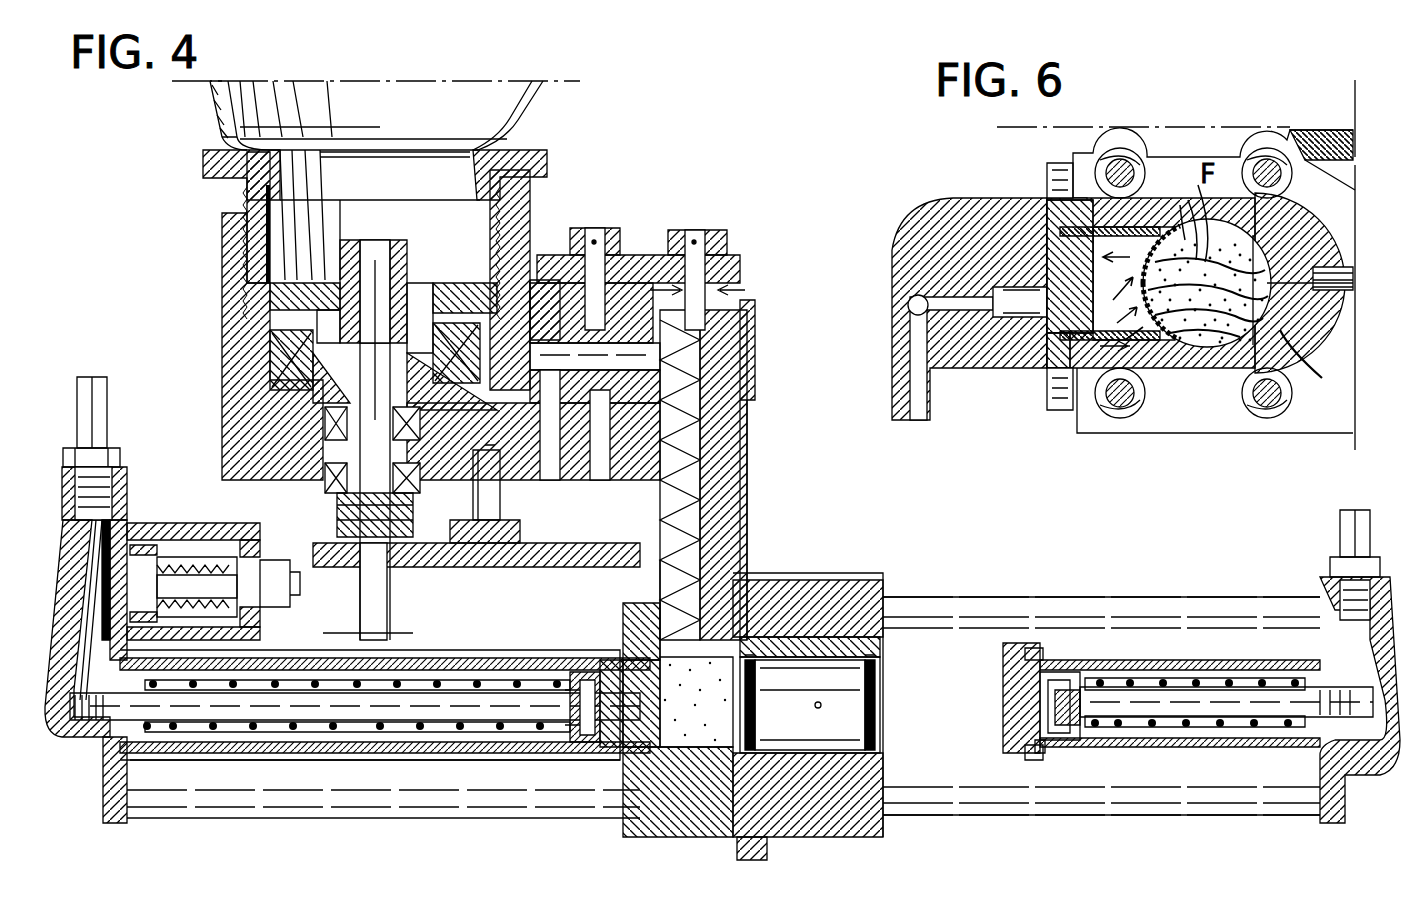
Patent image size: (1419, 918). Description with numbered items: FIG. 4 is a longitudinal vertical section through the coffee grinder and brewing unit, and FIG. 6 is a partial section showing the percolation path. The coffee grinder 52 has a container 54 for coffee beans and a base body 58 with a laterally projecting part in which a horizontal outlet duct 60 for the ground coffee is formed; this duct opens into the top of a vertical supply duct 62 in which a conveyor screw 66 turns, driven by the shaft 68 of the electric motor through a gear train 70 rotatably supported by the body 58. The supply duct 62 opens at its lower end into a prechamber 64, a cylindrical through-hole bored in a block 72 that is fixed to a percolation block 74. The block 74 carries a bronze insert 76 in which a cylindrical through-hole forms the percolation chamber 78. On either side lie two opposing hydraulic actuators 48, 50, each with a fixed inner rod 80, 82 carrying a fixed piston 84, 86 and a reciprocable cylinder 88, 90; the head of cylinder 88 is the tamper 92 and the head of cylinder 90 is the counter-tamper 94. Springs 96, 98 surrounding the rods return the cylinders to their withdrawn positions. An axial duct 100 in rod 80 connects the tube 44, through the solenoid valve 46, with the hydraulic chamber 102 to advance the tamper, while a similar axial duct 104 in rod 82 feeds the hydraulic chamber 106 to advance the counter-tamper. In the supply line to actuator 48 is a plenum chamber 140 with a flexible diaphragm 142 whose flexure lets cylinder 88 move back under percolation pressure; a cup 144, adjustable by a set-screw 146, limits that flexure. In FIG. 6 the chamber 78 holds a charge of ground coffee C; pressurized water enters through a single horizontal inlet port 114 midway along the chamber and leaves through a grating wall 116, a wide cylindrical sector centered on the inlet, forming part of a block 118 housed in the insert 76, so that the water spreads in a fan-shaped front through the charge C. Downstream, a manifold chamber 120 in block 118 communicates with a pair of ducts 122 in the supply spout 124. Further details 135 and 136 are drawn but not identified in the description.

In FIG. 4, the tube 44 is at (110, 390).
In FIG. 4, the solenoid valve 46 is at (1345, 540).
In FIG. 4, the hydraulic actuator 48 is at (372, 772).
In FIG. 4, the hydraulic actuator 50 is at (1202, 770).
In FIG. 4, the coffee grinder 52 is at (224, 200).
In FIG. 4, the container 54 is at (522, 108).
In FIG. 4, the base body 58 is at (228, 278).
In FIG. 4, the horizontal outlet duct 60 is at (533, 345).
In FIG. 4, the supply duct 62 is at (718, 365).
In FIG. 4, the prechamber 64 is at (700, 780).
In FIG. 4, the conveyor screw 66 is at (735, 440).
In FIG. 4, the shaft 68 is at (365, 605).
In FIG. 4, the gear train 70 is at (656, 218).
In FIG. 4, the block 72 is at (665, 780).
In FIG. 4, the percolation block 74 is at (830, 800).
In FIG. 6, the percolation block 74 is at (1172, 415).
In FIG. 4, the insert 76 is at (825, 630).
In FIG. 6, the insert 76 is at (1175, 360).
In FIG. 4, the percolation chamber 78 is at (875, 745).
In FIG. 6, the percolation chamber 78 is at (1260, 250).
In FIG. 4, the fixed inner rod 80 is at (315, 720).
In FIG. 4, the fixed inner rod 82 is at (1265, 720).
In FIG. 4, the fixed piston 84 is at (590, 745).
In FIG. 4, the fixed piston 86 is at (1060, 735).
In FIG. 4, the cylinder 88 is at (230, 765).
In FIG. 4, the cylinder 90 is at (1104, 725).
In FIG. 4, the tamper 92 is at (650, 770).
In FIG. 4, the counter-tamper 94 is at (1010, 725).
In FIG. 4, the spring 96 is at (178, 732).
In FIG. 4, the spring 98 is at (1182, 725).
In FIG. 4, the axial duct 100 is at (262, 735).
In FIG. 4, the hydraulic chamber 102 is at (615, 760).
In FIG. 4, the axial duct 104 is at (1262, 748).
In FIG. 4, the hydraulic chamber 106 is at (1035, 750).
In FIG. 4, the inlet port 114 is at (822, 705).
In FIG. 6, the inlet port 114 is at (1315, 320).
In FIG. 6, the grating wall 116 is at (1093, 385).
In FIG. 6, the block 118 is at (1045, 365).
In FIG. 6, the manifold chamber 120 is at (1050, 205).
In FIG. 6, the ducts 122 is at (908, 375).
In FIG. 6, the supply spout 124 is at (920, 265).
In FIG. 4, the seal ring 135 is at (878, 670).
In FIG. 4, the bore 136 is at (750, 745).
In FIG. 4, the plenum chamber 140 is at (190, 488).
In FIG. 4, the flexible diaphragm 142 is at (130, 570).
In FIG. 4, the cup 144 is at (100, 620).
In FIG. 4, the set-screw 146 is at (200, 560).
In FIG. 6, the charge of ground coffee C is at (1312, 363).